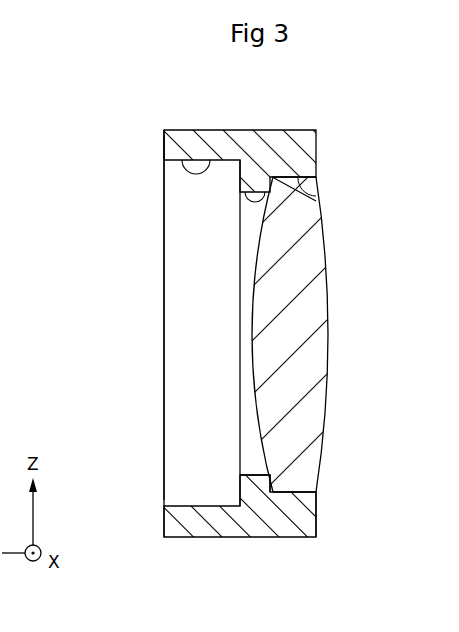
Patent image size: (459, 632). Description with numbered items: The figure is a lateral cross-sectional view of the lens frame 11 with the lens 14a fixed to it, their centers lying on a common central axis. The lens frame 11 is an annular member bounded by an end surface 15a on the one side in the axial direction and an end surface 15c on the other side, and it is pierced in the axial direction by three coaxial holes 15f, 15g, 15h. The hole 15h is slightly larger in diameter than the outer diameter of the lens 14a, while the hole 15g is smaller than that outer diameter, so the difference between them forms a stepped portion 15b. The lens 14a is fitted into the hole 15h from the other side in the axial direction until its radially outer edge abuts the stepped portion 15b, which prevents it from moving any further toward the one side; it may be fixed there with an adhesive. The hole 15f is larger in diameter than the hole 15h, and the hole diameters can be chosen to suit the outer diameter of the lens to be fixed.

The lens frame 11 is at (298, 140).
The lens 14a is at (313, 415).
The end surface 15a is at (163, 148).
The stepped portion 15b is at (270, 478).
The end surface 15c is at (317, 513).
The hole 15f is at (208, 160).
The hole 15g is at (261, 190).
The hole 15h is at (317, 192).